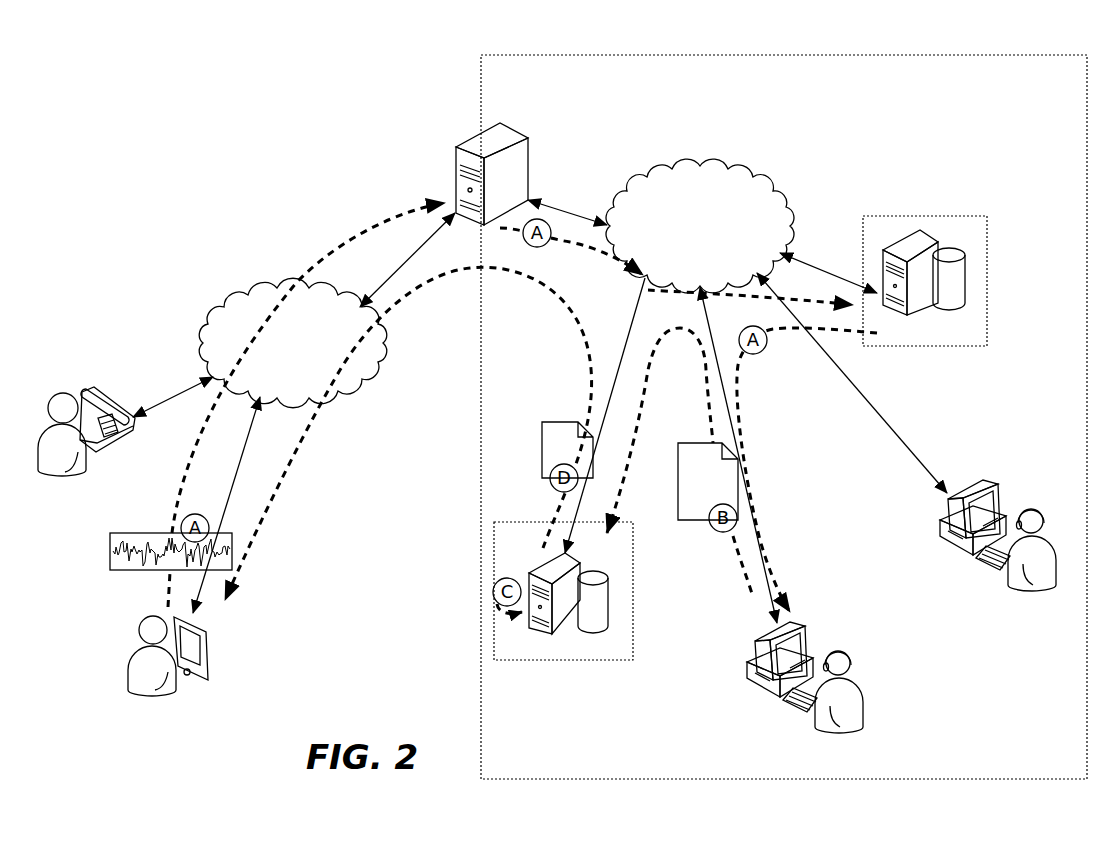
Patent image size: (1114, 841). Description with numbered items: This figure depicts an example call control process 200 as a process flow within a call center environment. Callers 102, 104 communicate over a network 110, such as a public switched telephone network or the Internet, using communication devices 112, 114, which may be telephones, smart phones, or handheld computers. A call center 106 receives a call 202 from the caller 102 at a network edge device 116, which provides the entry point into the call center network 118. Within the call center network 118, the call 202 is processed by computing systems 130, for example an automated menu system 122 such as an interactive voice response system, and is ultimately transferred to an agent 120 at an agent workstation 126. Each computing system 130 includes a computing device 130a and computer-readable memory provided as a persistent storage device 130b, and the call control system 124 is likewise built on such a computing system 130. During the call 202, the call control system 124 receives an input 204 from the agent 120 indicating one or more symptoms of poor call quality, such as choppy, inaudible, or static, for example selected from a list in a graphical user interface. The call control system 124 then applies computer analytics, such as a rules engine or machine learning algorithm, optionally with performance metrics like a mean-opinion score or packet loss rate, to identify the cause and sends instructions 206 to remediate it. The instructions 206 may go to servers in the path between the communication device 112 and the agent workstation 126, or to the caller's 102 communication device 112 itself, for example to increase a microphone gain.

The call control process 200 is at (203, 97).
The caller 102 is at (170, 690).
The caller 104 is at (70, 465).
The call center 106 is at (784, 417).
The network 110 is at (292, 343).
The communication device 112 is at (205, 678).
The communication device 114 is at (115, 438).
The network edge device 116 is at (456, 148).
The call center network 118 is at (700, 226).
The agent 120 is at (830, 724).
The automated menu system 122 is at (894, 249).
The call control system 124 is at (531, 632).
The agent workstation 126 is at (772, 698).
The computing system 130 is at (883, 234).
The computing device 130a is at (882, 255).
The persistent storage device 130b is at (950, 248).
The call 202 is at (112, 572).
The input 204 is at (680, 521).
The instructions 206 is at (545, 421).